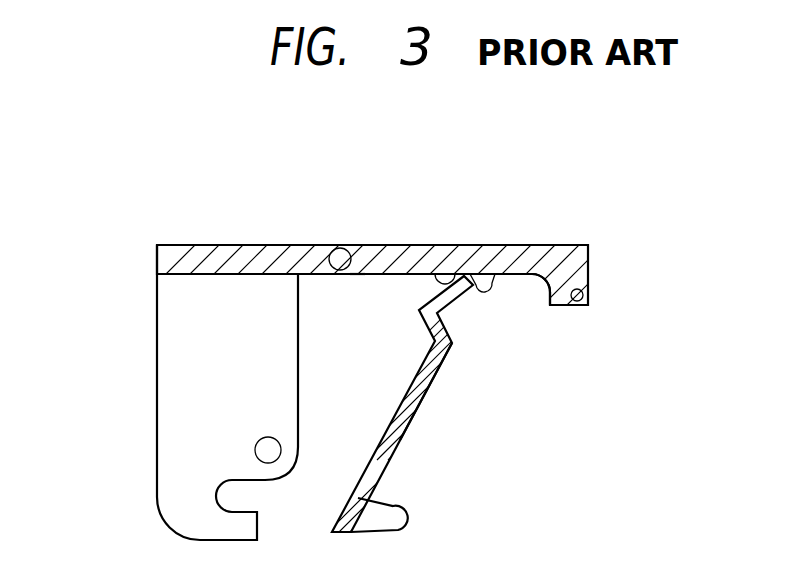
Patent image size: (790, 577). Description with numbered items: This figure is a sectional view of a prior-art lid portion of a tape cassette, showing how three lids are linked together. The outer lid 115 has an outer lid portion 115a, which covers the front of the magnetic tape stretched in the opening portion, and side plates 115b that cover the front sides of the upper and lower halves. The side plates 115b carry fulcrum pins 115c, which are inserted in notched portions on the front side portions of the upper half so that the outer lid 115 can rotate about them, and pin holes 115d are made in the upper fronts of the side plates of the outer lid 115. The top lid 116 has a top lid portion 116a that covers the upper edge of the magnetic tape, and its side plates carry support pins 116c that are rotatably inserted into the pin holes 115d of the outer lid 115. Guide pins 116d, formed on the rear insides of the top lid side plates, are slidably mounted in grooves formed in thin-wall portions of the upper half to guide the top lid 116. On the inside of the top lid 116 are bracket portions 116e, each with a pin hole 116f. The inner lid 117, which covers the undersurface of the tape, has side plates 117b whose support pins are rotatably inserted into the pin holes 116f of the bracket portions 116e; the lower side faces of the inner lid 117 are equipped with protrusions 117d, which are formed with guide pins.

The outer lid 115 is at (183, 246).
The outer lid portion 115a is at (250, 245).
The side plates 115b is at (173, 373).
The fulcrum pins 115c is at (255, 452).
The pin holes 115d is at (338, 248).
The top lid 116 is at (428, 246).
The top lid portion 116a is at (489, 246).
The support pins 116c is at (357, 247).
The guide pins 116d is at (590, 296).
The bracket portions 116e is at (508, 247).
The pin holes 116f is at (471, 286).
The inner lid 117 is at (410, 434).
The side plates 117b is at (437, 373).
The protrusions 117d is at (405, 520).